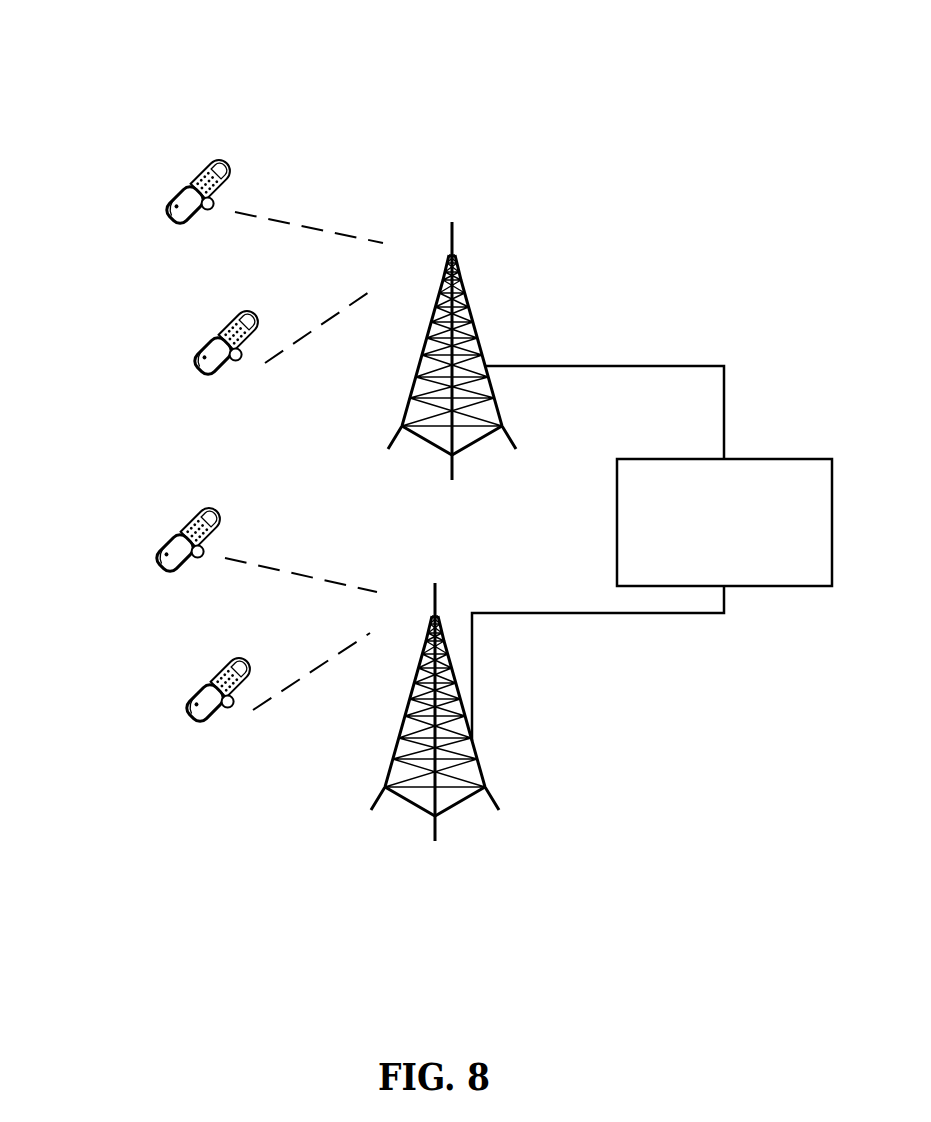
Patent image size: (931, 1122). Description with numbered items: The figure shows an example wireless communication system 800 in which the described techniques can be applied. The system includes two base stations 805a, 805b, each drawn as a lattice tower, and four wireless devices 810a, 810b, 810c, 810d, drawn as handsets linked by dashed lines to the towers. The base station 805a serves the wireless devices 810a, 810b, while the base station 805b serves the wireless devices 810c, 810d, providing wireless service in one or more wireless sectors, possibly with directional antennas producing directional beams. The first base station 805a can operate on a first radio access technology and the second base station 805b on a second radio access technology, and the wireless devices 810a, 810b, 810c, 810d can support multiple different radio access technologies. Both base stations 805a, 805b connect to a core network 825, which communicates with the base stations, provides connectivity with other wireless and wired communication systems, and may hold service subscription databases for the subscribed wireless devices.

The wireless communication system 800 is at (592, 60).
The base station 805a is at (468, 308).
The base station 805b is at (442, 615).
The wireless device 810a is at (193, 162).
The wireless device 810b is at (220, 312).
The wireless device 810c is at (137, 531).
The wireless device 810d is at (212, 660).
The core network 825 is at (630, 459).